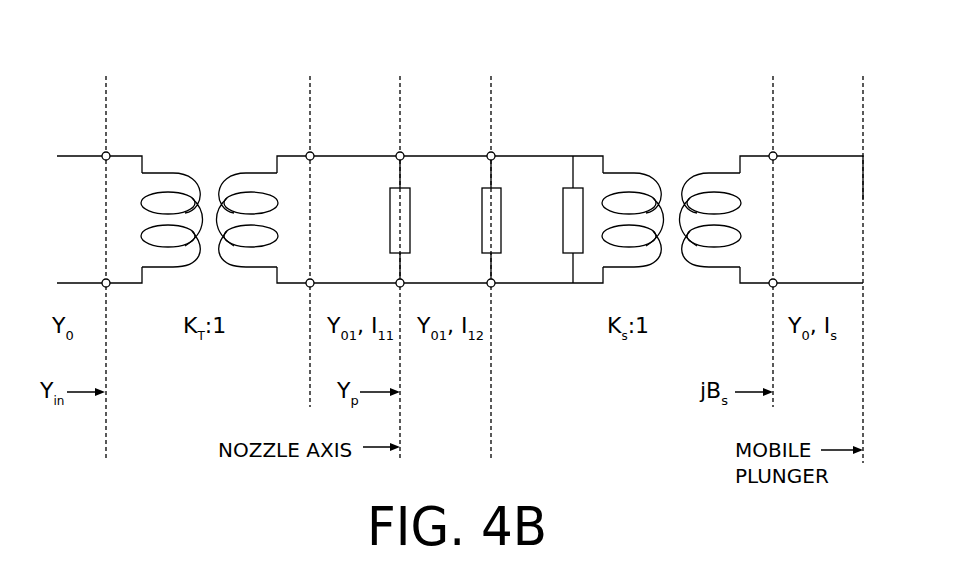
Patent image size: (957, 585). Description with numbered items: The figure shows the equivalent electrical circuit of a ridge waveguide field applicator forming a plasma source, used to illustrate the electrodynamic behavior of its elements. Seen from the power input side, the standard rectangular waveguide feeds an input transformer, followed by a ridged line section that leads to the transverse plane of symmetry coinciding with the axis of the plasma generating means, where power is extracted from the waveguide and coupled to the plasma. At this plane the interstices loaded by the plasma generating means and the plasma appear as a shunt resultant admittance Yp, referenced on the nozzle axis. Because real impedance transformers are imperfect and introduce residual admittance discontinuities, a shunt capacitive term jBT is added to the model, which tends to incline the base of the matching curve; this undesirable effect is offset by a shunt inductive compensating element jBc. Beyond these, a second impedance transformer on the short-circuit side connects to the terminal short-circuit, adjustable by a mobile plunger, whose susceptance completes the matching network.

The resultant admittance of the interstices Yp is at (385, 219).
The inductive compensating element jBc is at (471, 219).
The capacitive term jBT is at (555, 219).